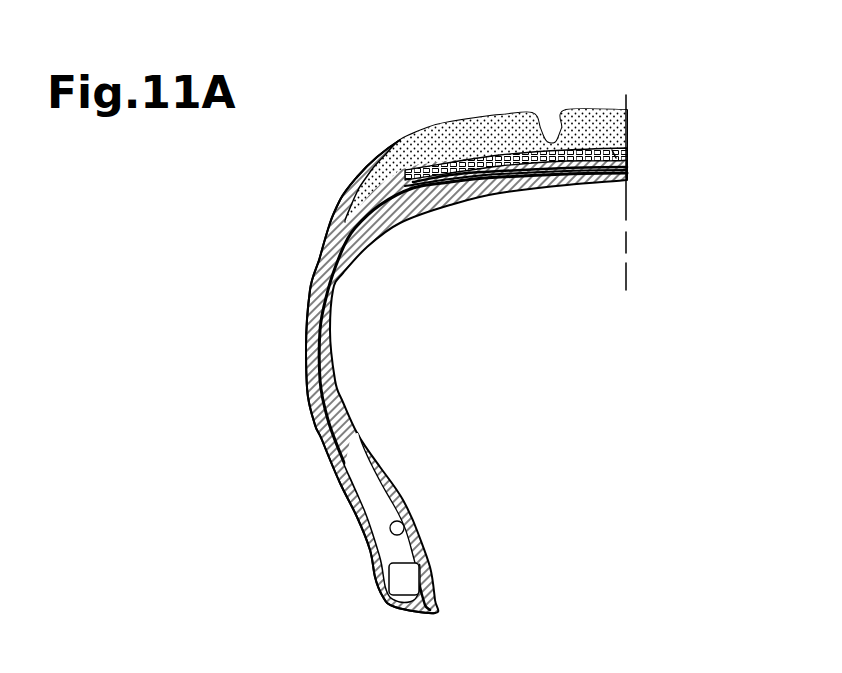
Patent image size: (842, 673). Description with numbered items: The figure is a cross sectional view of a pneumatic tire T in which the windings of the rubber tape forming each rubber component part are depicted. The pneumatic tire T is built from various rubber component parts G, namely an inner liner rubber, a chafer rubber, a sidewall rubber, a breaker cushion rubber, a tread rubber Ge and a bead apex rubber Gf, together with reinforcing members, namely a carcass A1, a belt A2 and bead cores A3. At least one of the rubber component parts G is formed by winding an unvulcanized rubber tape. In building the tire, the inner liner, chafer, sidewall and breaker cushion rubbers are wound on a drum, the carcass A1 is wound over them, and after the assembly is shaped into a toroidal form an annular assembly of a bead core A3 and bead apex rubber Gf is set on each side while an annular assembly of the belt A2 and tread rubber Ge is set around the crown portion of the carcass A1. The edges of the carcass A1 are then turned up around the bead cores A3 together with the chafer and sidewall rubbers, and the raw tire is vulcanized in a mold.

The rubber component parts G is at (322, 233).
The tread rubber Ge is at (473, 130).
The bead apex rubber Gf is at (397, 543).
The carcass ply A1 is at (418, 537).
The belt A2 is at (612, 158).
The bead core A3 is at (405, 583).
The pneumatic tire T is at (645, 243).